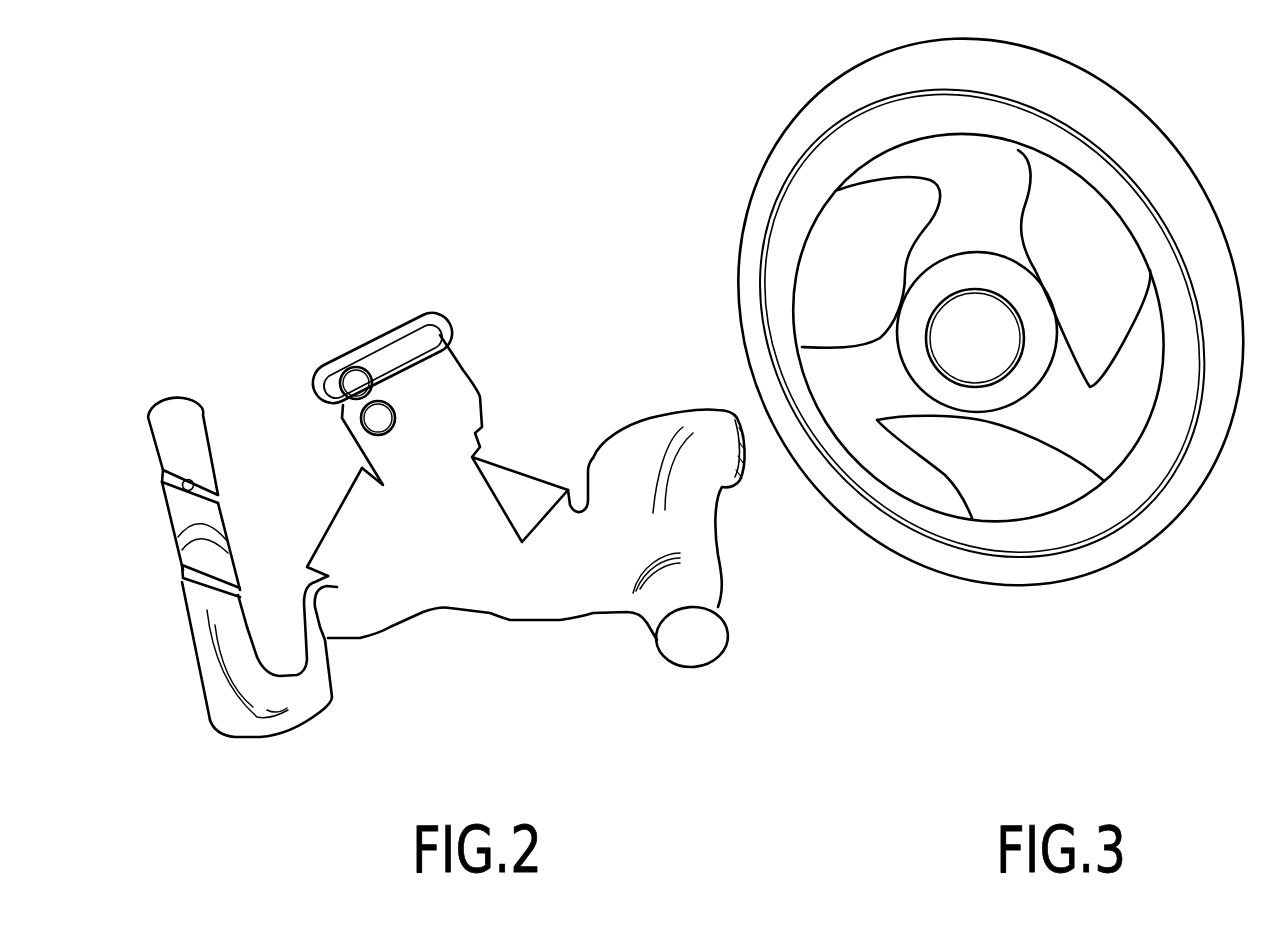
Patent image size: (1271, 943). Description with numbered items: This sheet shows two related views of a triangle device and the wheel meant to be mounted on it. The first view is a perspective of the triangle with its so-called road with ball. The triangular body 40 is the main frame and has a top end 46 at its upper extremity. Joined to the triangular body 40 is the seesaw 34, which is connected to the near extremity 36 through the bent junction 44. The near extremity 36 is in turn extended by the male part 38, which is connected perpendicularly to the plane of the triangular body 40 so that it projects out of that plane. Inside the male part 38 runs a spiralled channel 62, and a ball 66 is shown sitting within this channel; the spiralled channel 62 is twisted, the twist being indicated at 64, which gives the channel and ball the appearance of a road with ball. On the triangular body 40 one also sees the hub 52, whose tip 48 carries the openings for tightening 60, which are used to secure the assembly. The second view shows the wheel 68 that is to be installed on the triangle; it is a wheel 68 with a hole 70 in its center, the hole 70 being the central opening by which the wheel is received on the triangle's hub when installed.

In FIG. 2, the seesaw 34 is at (328, 530).
In FIG. 2, the near extremity 36 is at (265, 707).
In FIG. 2, the male part 38 is at (195, 608).
In FIG. 2, the triangular body 40 is at (483, 533).
In FIG. 2, the bent junction 44 is at (330, 662).
In FIG. 2, the top end 46 is at (425, 317).
In FIG. 2, the tip 48 is at (390, 357).
In FIG. 2, the hub 52 is at (700, 635).
In FIG. 2, the openings for tightening 60 is at (357, 382).
In FIG. 2, the spiralled channel 62 is at (167, 473).
In FIG. 2, the twisted portion of spiralled channel 64 is at (158, 475).
In FIG. 2, the ball 66 is at (188, 480).
In FIG. 3, the wheel 68 is at (782, 173).
In FIG. 3, the hole 70 is at (965, 350).